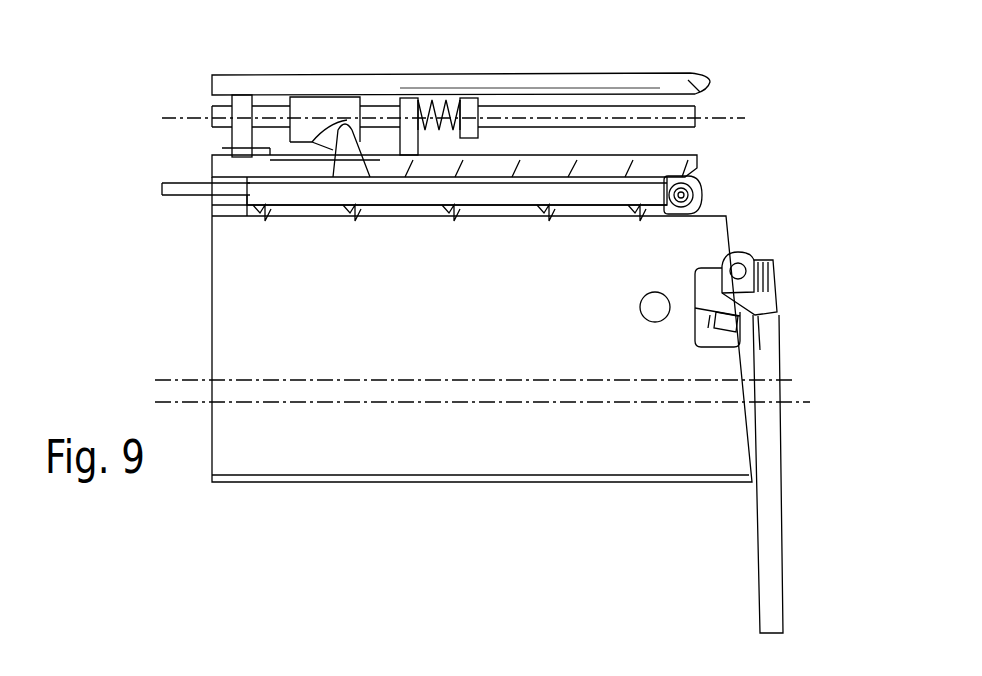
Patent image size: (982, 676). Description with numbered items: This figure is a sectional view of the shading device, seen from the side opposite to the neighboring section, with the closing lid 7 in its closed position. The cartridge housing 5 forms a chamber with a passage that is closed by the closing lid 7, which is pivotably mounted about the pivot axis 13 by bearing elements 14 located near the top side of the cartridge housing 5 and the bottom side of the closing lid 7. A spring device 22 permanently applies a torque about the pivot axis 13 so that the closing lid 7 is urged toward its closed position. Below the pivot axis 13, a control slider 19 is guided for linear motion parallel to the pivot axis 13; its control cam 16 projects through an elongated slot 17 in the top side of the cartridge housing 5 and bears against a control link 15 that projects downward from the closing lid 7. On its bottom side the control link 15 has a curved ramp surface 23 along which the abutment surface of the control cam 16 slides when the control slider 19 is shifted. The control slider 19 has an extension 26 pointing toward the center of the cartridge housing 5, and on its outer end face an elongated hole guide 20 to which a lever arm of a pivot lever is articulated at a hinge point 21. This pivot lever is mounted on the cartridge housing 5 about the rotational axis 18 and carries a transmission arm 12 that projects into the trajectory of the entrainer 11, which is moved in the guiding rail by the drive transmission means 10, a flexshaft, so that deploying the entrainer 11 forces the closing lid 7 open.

The cartridge housing 5 is at (487, 458).
The closing lid 7 is at (602, 88).
The drive transmission means 10 is at (773, 506).
The entrainer 11 is at (765, 302).
The transmission arm 12 is at (710, 320).
The pivot axis 13 is at (718, 113).
The bearing elements 14 is at (247, 103).
The control link 15 is at (308, 112).
The control cam 16 is at (362, 143).
The elongated slot 17 is at (272, 160).
The rotational axis 18 is at (648, 318).
The control slider 19 is at (463, 195).
The elongated hole guide 20 is at (702, 185).
The hinge point 21 is at (690, 199).
The spring device 22 is at (440, 133).
The ramp surface 23 is at (316, 140).
The extension 26 is at (183, 195).